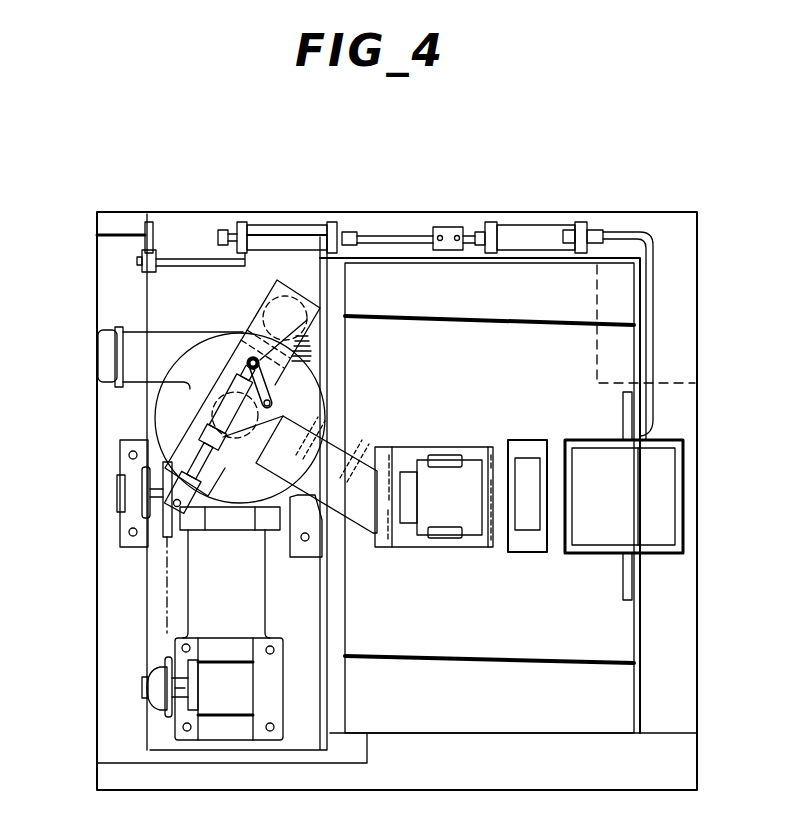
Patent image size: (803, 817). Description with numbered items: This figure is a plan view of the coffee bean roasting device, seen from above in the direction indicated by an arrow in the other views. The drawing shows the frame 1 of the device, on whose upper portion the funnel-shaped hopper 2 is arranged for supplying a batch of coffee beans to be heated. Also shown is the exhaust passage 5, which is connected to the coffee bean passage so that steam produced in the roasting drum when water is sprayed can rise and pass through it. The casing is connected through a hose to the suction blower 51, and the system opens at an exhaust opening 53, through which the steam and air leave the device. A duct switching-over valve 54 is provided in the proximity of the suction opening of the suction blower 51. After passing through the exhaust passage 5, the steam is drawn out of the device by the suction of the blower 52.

The frame 1 is at (698, 682).
The funnel-shaped hopper 2 is at (662, 497).
The exhaust passage 5 is at (387, 457).
The suction blower 51 is at (210, 378).
The blower 52 is at (147, 398).
The exhaust opening 53 is at (97, 352).
The duct switching-over valve 54 is at (150, 466).